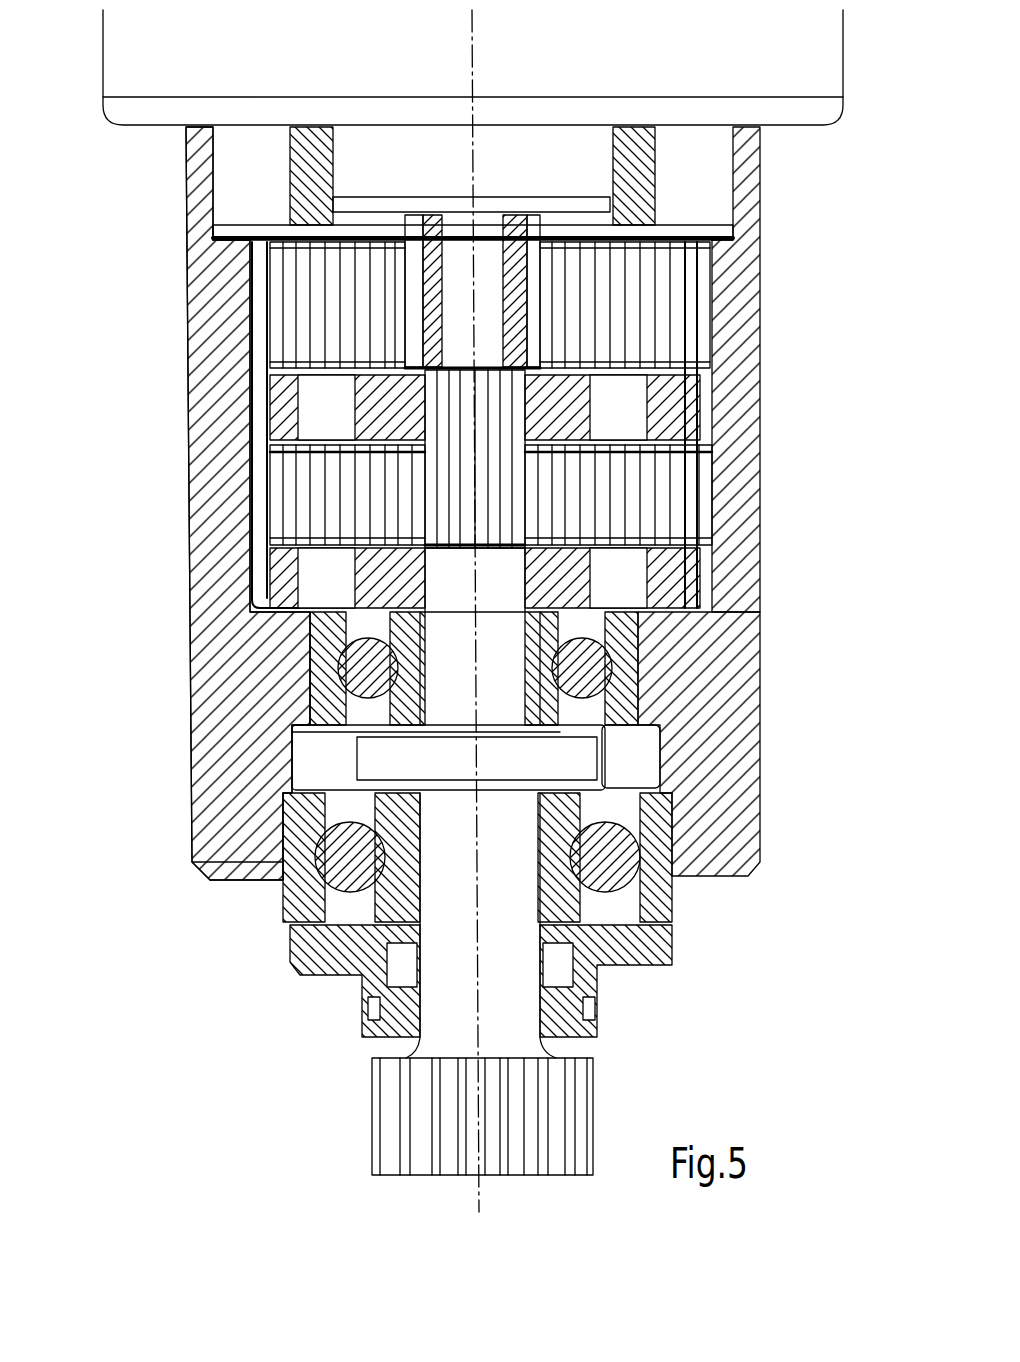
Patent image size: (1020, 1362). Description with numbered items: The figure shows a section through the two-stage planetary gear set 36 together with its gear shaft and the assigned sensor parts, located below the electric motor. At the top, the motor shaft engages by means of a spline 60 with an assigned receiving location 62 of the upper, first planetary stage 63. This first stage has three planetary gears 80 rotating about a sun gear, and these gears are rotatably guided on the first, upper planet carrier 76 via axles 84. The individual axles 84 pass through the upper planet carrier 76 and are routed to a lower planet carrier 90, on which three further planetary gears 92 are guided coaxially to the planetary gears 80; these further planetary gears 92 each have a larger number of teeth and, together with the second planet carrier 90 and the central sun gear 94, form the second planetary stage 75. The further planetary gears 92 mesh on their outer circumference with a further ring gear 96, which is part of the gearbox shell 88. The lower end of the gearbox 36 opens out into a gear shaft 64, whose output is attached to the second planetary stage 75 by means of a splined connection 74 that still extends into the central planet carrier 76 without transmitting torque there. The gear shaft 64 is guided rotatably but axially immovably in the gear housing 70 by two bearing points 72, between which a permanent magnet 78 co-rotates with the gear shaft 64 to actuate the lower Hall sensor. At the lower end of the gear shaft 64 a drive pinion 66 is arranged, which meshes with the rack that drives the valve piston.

The two-stage planetary gear set 36 is at (685, 315).
The spline 60 is at (428, 203).
The receiving location 62 is at (484, 266).
The first planetary stage 63 is at (290, 306).
The gear shaft 64 is at (503, 997).
The drive pinion 66 is at (575, 1110).
The gear housing 70 is at (735, 530).
The bearing points 72 is at (620, 668).
The splined connection 74 is at (697, 405).
The second planetary stage 75 is at (318, 495).
The planet carrier 76 is at (270, 405).
The permanent magnet 78 is at (447, 765).
The planetary gears 80 is at (472, 291).
The axles 84 is at (622, 410).
The gearbox shell 88 is at (720, 710).
The lower planet carrier 90 is at (290, 582).
The further planetary gears 92 is at (710, 467).
The sun gear 94 is at (440, 520).
The ring gear 96 is at (690, 490).